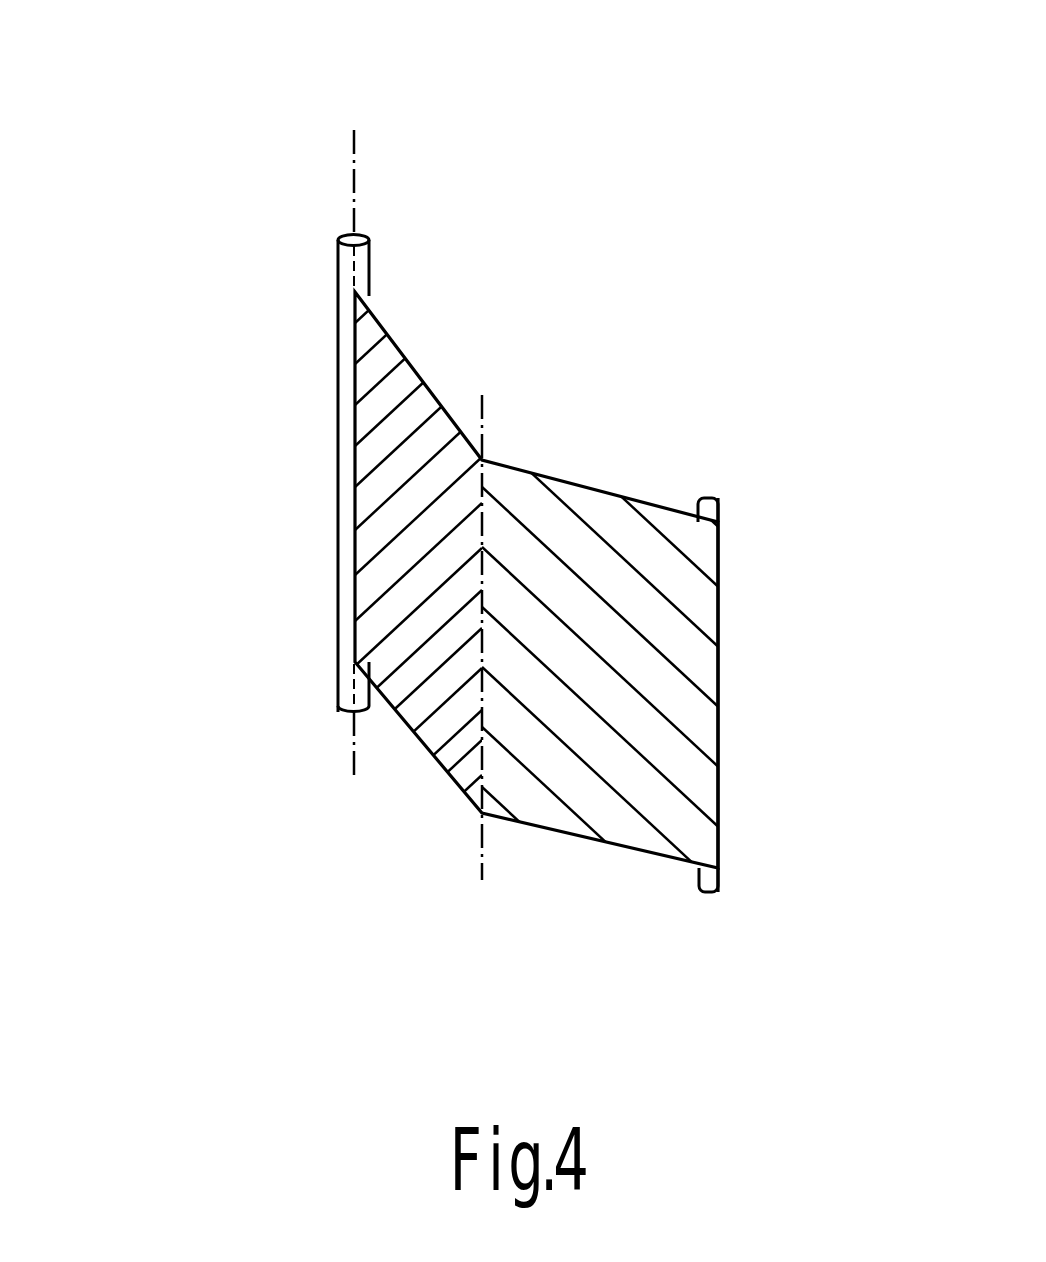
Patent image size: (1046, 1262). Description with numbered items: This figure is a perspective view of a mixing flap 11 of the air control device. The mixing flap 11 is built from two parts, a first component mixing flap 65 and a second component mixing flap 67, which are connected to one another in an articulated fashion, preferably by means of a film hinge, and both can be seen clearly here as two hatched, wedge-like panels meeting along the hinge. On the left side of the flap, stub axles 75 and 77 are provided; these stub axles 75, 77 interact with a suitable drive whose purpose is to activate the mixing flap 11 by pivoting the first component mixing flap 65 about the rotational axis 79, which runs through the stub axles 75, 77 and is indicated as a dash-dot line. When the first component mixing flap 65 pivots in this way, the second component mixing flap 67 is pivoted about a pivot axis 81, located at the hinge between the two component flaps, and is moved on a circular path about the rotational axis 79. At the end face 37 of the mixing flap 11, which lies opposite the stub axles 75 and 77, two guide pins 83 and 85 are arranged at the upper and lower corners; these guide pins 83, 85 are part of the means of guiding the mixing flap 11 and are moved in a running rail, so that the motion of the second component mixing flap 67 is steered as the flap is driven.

The mixing flap 11 is at (676, 343).
The end face 37 is at (720, 622).
The first component mixing flap 65 is at (425, 588).
The second component mixing flap 67 is at (620, 703).
The stub axle 75 is at (337, 258).
The stub axle 77 is at (330, 697).
The rotational axis 79 is at (357, 152).
The pivot axis 81 is at (472, 862).
The guide pin 83 is at (730, 502).
The guide pin 85 is at (720, 880).